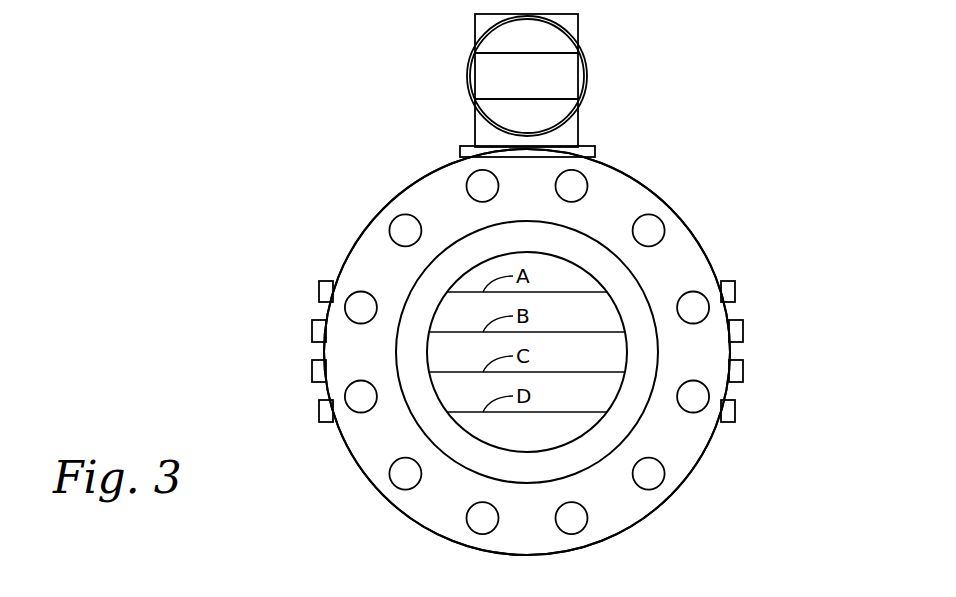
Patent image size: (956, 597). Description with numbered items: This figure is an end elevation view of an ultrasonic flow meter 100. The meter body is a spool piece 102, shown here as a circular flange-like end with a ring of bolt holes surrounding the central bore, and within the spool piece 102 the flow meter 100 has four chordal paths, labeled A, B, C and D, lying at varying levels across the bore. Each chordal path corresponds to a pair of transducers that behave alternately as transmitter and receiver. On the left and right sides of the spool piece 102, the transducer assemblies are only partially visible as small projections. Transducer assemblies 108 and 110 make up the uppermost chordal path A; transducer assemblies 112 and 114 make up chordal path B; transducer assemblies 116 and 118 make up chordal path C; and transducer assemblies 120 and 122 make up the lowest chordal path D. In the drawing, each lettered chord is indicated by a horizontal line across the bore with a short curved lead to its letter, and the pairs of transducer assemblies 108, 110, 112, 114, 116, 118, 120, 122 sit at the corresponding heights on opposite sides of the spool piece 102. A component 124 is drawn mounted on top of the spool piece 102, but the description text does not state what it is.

The ultrasonic flow meter 100 is at (347, 165).
The spool piece 102 is at (650, 180).
The transducer assembly 108 is at (317, 290).
The transducer assembly 110 is at (737, 291).
The transducer assembly 112 is at (311, 331).
The transducer assembly 114 is at (745, 331).
The transducer assembly 116 is at (311, 371).
The transducer assembly 118 is at (745, 371).
The transducer assembly 120 is at (317, 411).
The transducer assembly 122 is at (737, 411).
The inlet fitting 124 is at (587, 75).